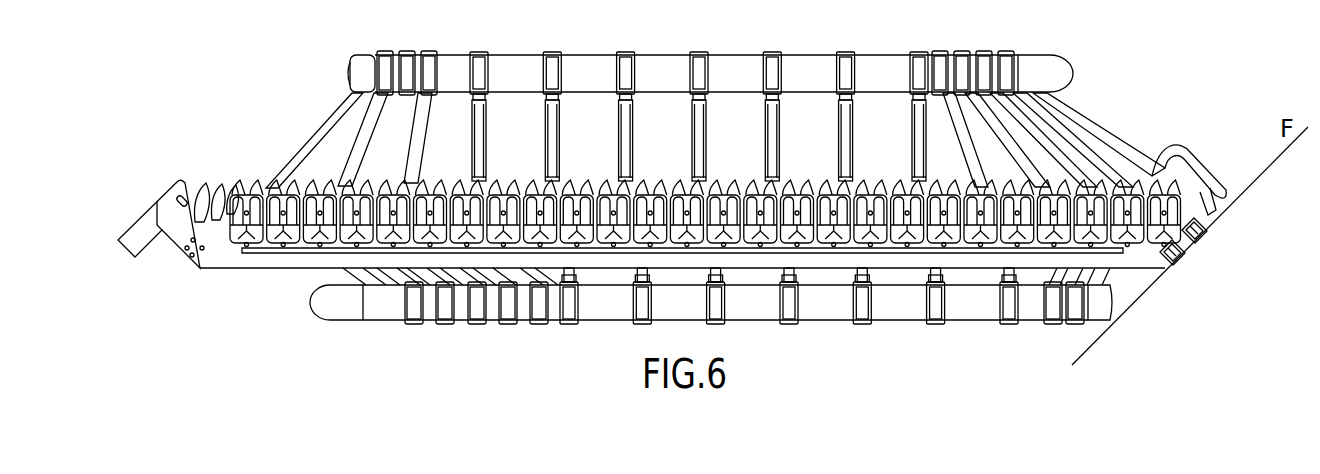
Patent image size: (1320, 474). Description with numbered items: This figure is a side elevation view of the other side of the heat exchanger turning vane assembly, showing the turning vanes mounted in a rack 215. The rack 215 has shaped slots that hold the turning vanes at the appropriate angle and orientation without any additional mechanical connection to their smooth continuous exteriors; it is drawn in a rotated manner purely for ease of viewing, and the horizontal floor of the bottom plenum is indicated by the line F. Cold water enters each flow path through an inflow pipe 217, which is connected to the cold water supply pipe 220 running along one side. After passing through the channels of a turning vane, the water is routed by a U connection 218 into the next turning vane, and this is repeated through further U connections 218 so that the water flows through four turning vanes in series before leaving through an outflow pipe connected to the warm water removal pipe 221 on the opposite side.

The rack 215 is at (216, 258).
The inflow pipe 217 is at (314, 138).
The U connection 218 is at (286, 245).
The cold water supply pipe 220 is at (798, 64).
The warm water removal pipe 221 is at (838, 315).